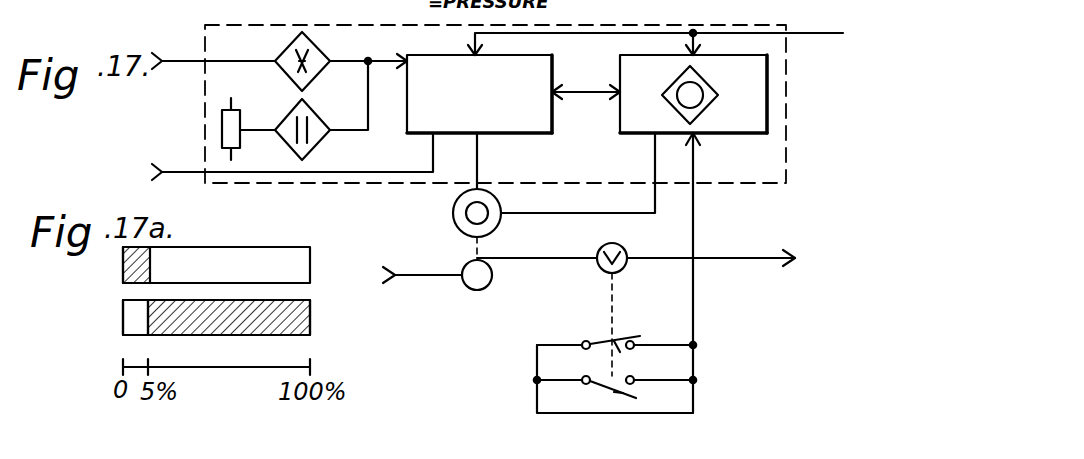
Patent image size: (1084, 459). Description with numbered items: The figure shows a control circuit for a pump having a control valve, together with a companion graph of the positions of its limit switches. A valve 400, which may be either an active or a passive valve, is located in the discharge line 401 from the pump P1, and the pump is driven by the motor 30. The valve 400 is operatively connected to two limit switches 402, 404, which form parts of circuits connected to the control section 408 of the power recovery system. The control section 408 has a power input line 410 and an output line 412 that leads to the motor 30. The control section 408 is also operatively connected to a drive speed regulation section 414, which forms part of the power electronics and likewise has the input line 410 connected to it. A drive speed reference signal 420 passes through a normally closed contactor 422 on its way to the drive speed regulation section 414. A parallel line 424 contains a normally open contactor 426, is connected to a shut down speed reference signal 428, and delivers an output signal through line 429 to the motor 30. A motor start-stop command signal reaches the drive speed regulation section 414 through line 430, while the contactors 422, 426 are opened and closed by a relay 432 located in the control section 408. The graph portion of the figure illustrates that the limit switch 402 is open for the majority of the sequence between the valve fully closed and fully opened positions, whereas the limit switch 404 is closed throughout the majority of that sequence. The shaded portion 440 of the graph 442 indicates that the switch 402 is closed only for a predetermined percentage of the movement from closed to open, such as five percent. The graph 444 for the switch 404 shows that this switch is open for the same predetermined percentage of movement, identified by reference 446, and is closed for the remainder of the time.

In FIG. 17, the drive speed reference signal 420 is at (180, 60).
In FIG. 17, the normally closed contactor 422 is at (300, 33).
In FIG. 17, the parallel line 424 is at (261, 126).
In FIG. 17, the normally open contactor 426 is at (314, 136).
In FIG. 17, the shut down speed reference signal 428 is at (222, 118).
In FIG. 17, the line 430 is at (190, 164).
In FIG. 17, the drive speed regulation section 414 is at (505, 106).
In FIG. 17, the control section 408 is at (767, 77).
In FIG. 17, the power input line 410 is at (803, 33).
In FIG. 17, the output line 412 is at (655, 166).
In FIG. 17, the line 429 is at (477, 160).
In FIG. 17, the relay 432 is at (706, 103).
In FIG. 17, the motor 30 is at (453, 214).
In FIG. 17, the pump P1 is at (470, 289).
In FIG. 17, the valve 400 is at (598, 251).
In FIG. 17, the discharge line 401 is at (722, 259).
In FIG. 17, the limit switch 402 is at (602, 341).
In FIG. 17, the limit switch 404 is at (600, 389).
In FIG. 17a, the shaded portion 440 is at (123, 276).
In FIG. 17a, the graph 442 is at (218, 247).
In FIG. 17a, the graph 444 is at (310, 318).
In FIG. 17a, the reference 446 is at (123, 318).